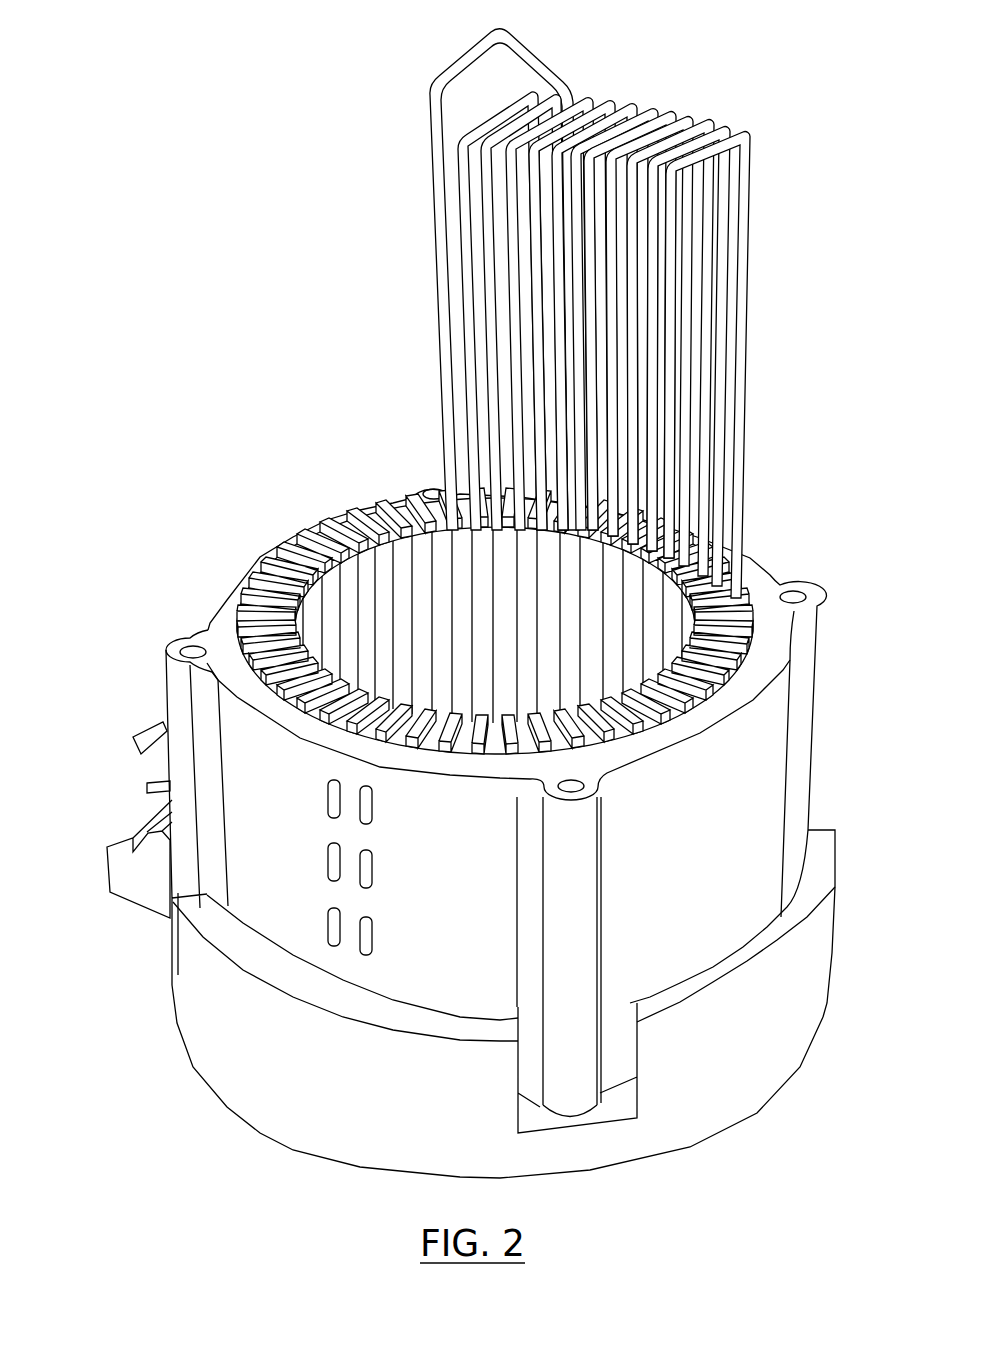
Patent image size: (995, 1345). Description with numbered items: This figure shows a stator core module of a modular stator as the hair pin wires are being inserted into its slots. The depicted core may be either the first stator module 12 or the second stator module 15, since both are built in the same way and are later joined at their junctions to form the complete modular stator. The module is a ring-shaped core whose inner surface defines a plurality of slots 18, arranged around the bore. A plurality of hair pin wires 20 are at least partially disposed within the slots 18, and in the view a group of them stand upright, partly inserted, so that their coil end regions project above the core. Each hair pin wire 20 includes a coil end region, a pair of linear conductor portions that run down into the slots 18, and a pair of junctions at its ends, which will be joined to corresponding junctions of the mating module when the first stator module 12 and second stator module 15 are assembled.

The first stator module 12 is at (445, 833).
The second stator module 15 is at (134, 1013).
The slots 18 is at (336, 533).
The first hair pin wires 20 is at (626, 110).